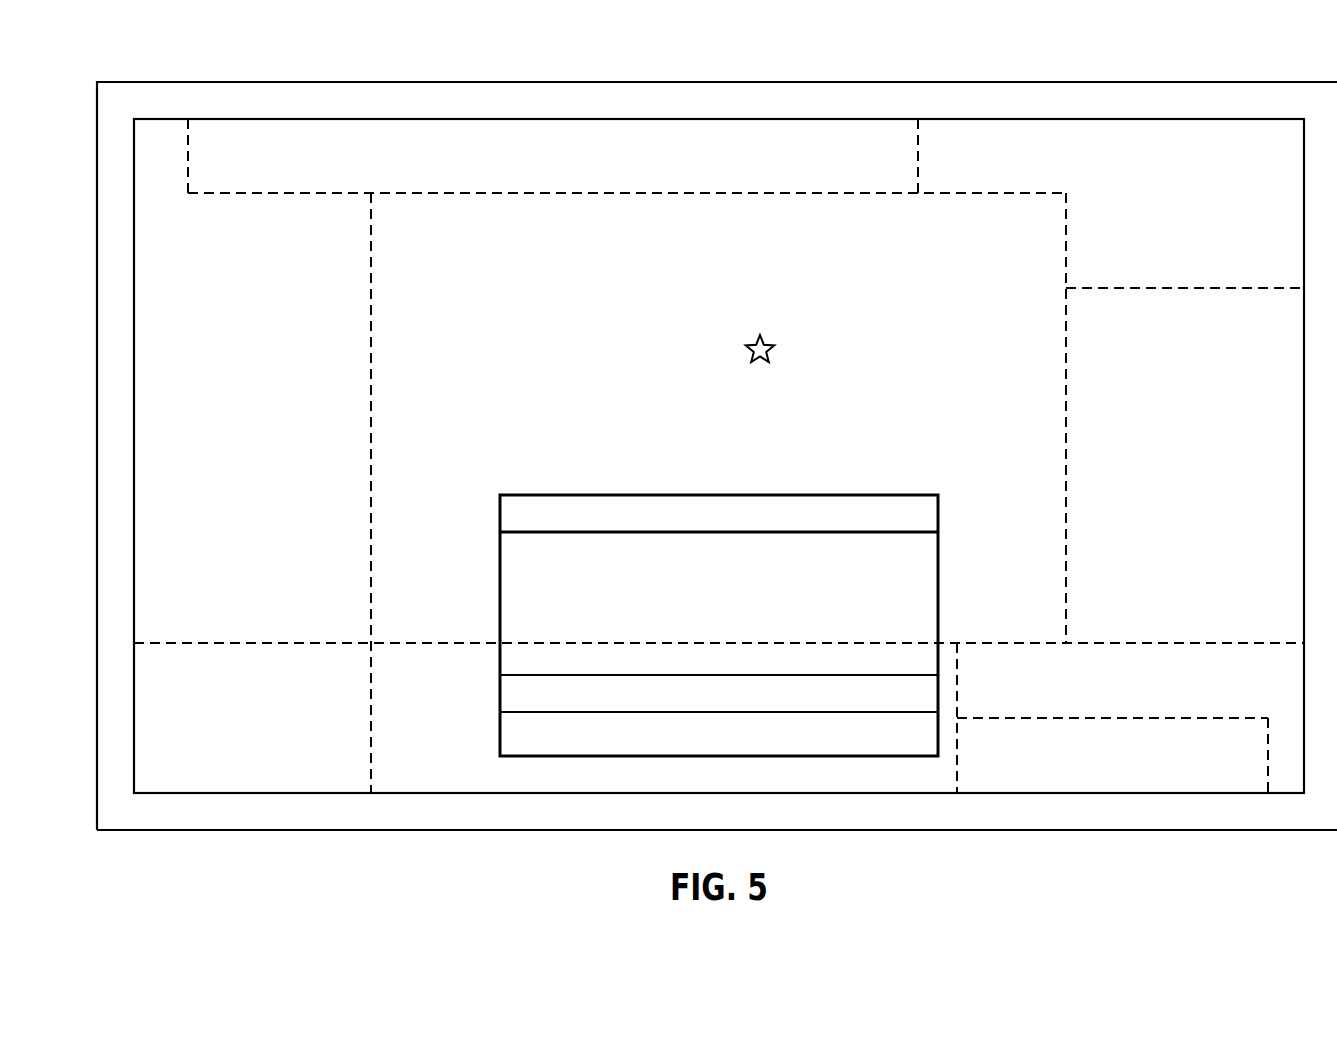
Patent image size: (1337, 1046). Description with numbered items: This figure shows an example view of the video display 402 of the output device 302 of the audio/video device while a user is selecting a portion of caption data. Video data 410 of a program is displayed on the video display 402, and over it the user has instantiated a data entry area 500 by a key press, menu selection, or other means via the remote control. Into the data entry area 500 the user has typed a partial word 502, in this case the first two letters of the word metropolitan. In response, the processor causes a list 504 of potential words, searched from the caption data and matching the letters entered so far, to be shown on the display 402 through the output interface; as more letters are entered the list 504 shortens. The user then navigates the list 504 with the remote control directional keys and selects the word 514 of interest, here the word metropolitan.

The output device 302 is at (1258, 82).
The video display 402 is at (1083, 119).
The video data 410 is at (371, 165).
The data entry area 500 is at (938, 513).
The partial word 502 is at (500, 513).
The list 504 is at (938, 578).
The word 514 is at (500, 697).